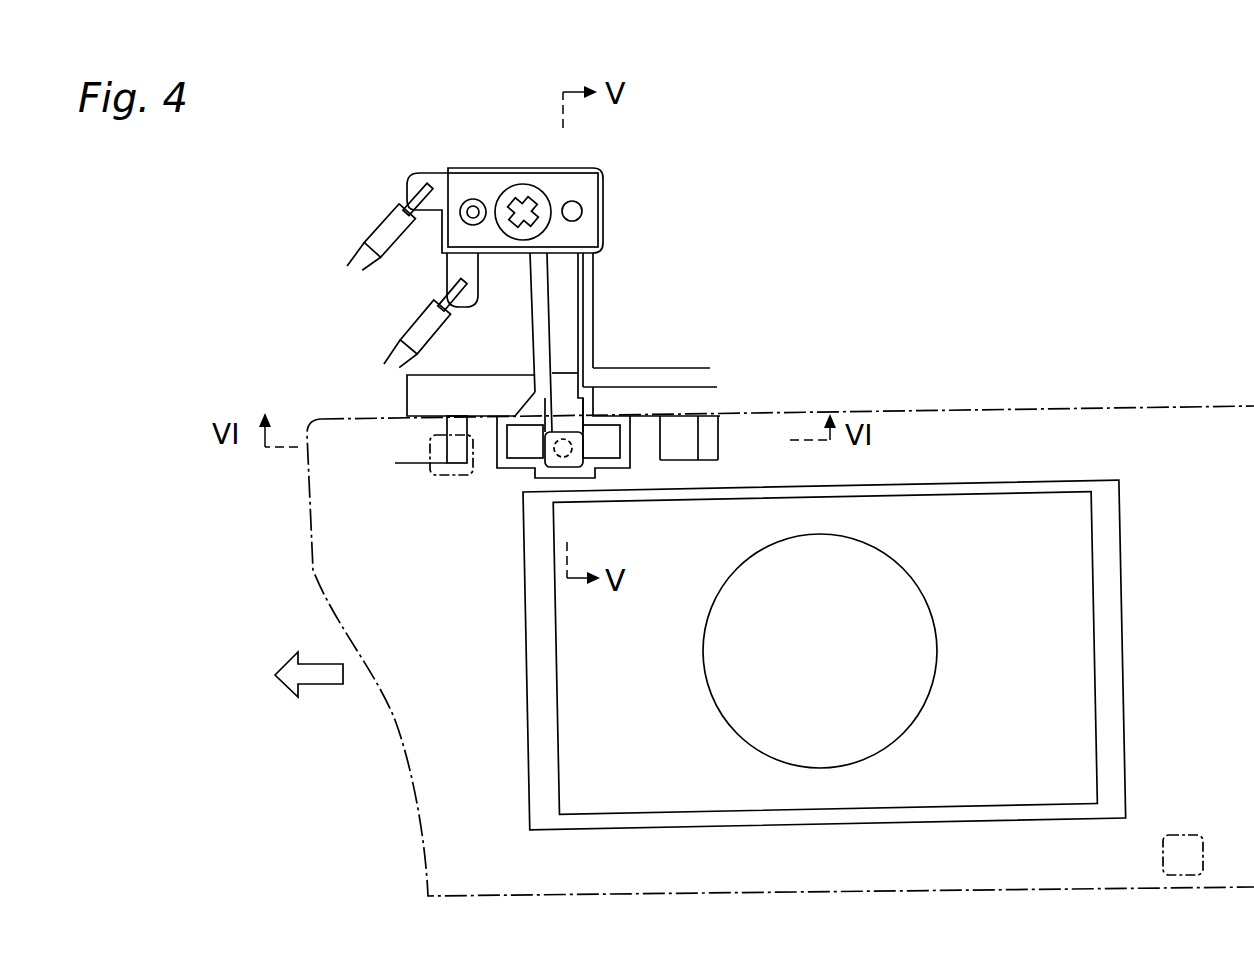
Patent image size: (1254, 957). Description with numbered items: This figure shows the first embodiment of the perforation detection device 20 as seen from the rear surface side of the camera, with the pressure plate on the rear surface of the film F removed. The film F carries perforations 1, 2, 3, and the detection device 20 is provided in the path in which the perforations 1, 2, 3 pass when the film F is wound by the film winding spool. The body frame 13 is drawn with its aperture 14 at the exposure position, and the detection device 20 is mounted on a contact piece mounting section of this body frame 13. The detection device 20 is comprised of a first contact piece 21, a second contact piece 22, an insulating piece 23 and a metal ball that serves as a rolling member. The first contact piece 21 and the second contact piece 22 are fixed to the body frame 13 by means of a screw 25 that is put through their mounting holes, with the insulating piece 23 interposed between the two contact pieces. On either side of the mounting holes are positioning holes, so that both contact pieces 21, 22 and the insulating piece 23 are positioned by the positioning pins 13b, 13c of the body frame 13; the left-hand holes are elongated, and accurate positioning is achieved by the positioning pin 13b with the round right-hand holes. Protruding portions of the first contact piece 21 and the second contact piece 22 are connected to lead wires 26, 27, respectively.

The perforation 1 is at (578, 473).
The perforation 2 is at (434, 499).
The perforation 3 is at (433, 477).
The body frame 13 is at (596, 328).
The positioning pin 13b is at (574, 210).
The positioning pin 13c is at (470, 204).
The aperture 14 is at (1018, 495).
The detection device 20 is at (627, 234).
The first contact piece 21 is at (577, 308).
The second contact piece 22 is at (630, 442).
The insulating piece 23 is at (577, 170).
The screw 25 is at (508, 193).
The lead wire 26 is at (372, 257).
The lead wire 27 is at (400, 342).
The film F is at (1017, 408).